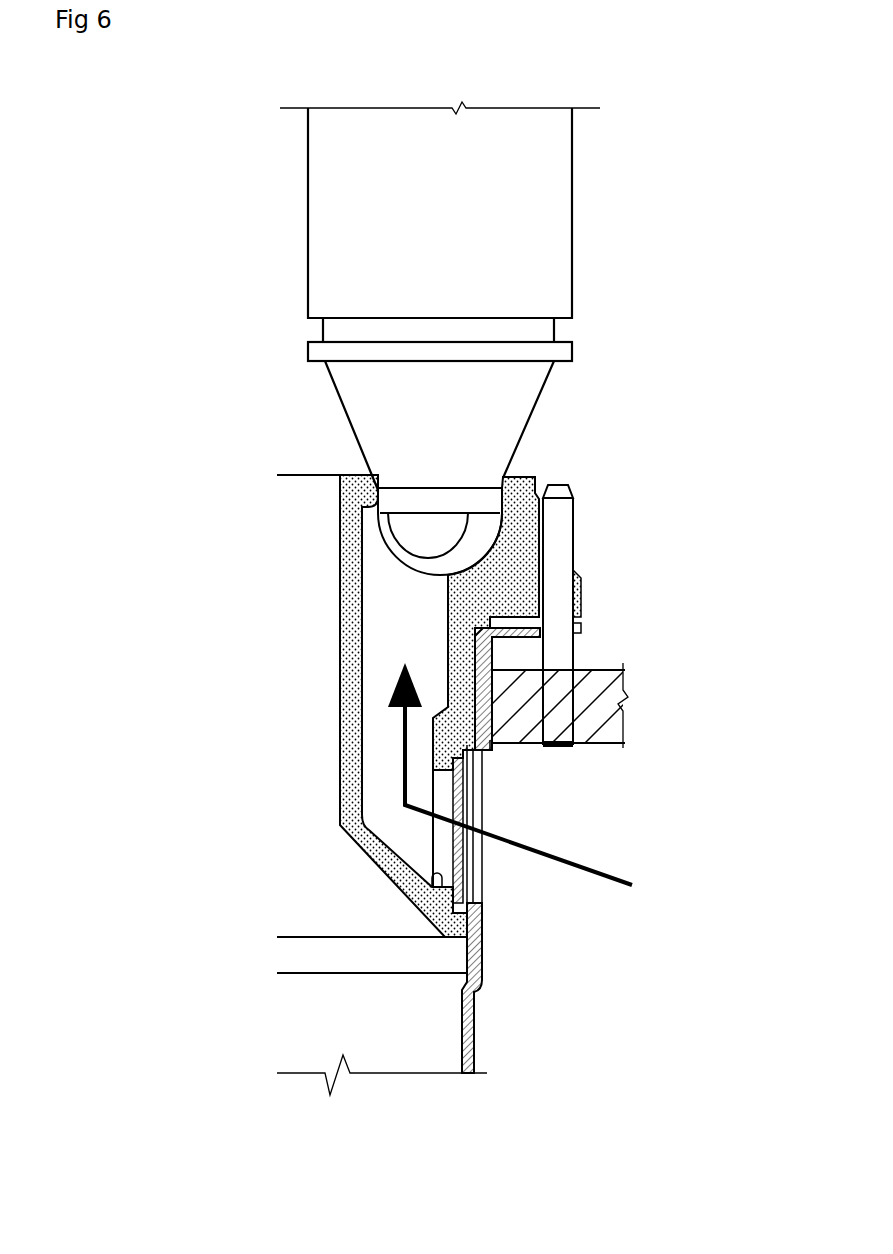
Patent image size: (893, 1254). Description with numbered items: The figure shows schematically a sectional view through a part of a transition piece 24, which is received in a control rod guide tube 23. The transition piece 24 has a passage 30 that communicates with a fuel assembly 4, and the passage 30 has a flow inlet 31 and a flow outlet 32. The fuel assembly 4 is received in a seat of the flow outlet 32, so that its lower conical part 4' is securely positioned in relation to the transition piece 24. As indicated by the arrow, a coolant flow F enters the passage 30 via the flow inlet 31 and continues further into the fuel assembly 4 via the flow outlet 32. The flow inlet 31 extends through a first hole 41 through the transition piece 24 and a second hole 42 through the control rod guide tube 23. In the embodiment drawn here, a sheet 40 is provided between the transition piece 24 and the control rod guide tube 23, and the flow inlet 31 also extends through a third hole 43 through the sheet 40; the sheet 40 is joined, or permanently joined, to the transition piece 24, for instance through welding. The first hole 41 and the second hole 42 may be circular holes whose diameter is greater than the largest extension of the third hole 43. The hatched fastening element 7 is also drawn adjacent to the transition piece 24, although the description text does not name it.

The fuel assembly 4 is at (357, 231).
The lower conical part 4' is at (353, 423).
The flow outlet 32 is at (374, 480).
The transition piece 24 is at (348, 600).
The passage 30 is at (417, 632).
The fastening element 7 is at (623, 687).
The flow inlet 31 is at (455, 840).
The sheet 40 is at (463, 792).
The coolant flow F is at (558, 858).
The third hole 43 is at (447, 847).
The first hole 41 is at (440, 873).
The second hole 42 is at (480, 903).
The control rod guide tube 23 is at (473, 1004).